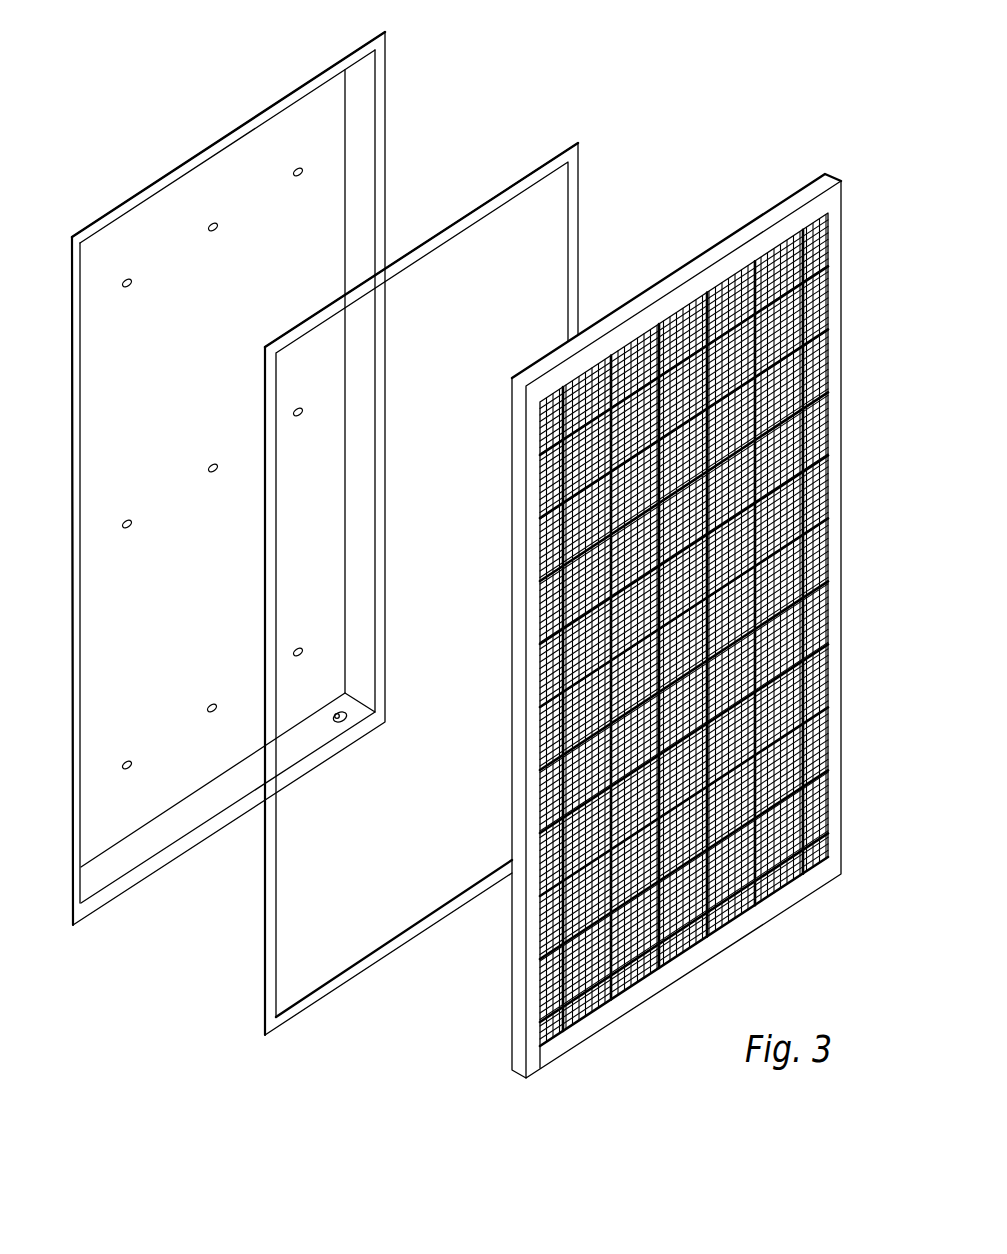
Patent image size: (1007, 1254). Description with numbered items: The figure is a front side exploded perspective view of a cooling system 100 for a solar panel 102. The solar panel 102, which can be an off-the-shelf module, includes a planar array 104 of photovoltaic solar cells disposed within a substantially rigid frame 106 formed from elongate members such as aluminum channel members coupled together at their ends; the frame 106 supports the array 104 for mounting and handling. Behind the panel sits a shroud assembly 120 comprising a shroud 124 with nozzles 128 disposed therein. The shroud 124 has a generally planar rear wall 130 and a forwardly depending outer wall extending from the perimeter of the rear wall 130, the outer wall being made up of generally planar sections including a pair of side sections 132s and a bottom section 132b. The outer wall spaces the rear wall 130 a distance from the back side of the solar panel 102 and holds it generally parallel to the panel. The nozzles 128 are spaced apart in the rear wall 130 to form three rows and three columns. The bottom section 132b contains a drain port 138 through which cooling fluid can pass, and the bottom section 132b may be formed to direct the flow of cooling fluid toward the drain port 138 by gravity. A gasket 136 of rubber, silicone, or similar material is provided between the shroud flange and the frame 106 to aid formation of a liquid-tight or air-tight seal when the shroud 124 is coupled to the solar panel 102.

The cooling system 100 is at (630, 45).
The solar panel 102 is at (793, 193).
The planar array 104 is at (665, 342).
The frame 106 is at (718, 240).
The shroud assembly 120 is at (434, 79).
The shroud 124 is at (157, 183).
The nozzles 128 is at (302, 178).
The rear wall 130 is at (130, 358).
The side sections 132s is at (363, 128).
The bottom section 132b is at (180, 832).
The gasket 136 is at (580, 172).
The drain port 138 is at (341, 724).